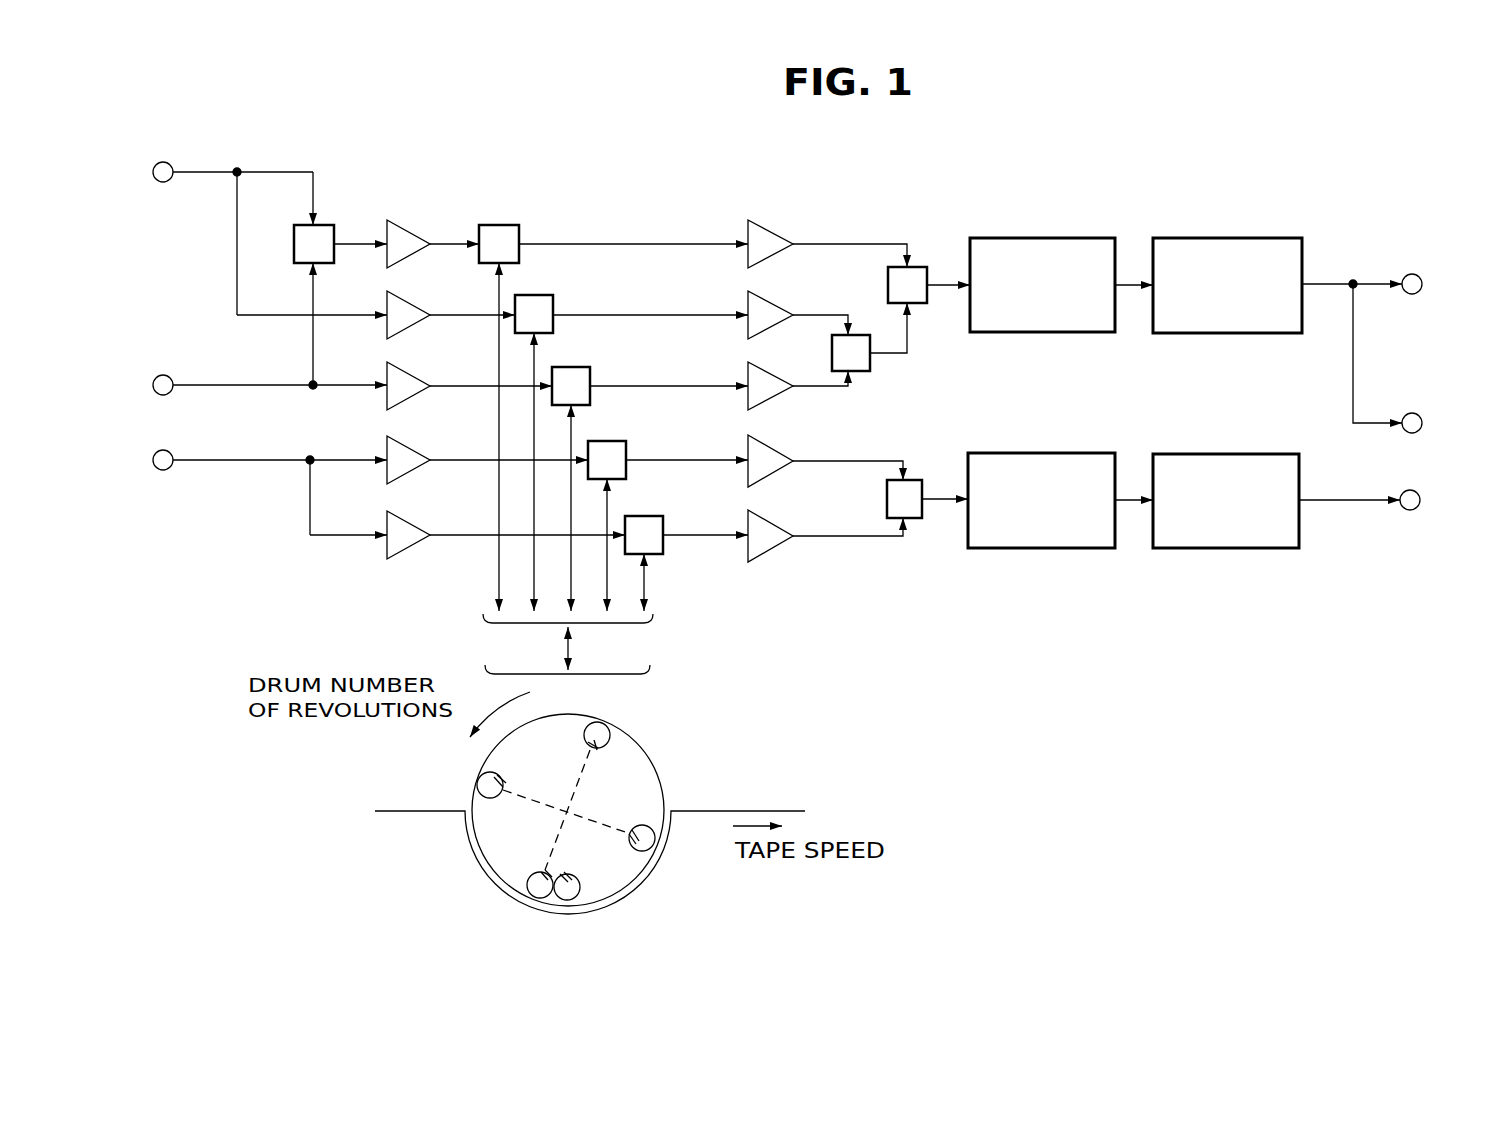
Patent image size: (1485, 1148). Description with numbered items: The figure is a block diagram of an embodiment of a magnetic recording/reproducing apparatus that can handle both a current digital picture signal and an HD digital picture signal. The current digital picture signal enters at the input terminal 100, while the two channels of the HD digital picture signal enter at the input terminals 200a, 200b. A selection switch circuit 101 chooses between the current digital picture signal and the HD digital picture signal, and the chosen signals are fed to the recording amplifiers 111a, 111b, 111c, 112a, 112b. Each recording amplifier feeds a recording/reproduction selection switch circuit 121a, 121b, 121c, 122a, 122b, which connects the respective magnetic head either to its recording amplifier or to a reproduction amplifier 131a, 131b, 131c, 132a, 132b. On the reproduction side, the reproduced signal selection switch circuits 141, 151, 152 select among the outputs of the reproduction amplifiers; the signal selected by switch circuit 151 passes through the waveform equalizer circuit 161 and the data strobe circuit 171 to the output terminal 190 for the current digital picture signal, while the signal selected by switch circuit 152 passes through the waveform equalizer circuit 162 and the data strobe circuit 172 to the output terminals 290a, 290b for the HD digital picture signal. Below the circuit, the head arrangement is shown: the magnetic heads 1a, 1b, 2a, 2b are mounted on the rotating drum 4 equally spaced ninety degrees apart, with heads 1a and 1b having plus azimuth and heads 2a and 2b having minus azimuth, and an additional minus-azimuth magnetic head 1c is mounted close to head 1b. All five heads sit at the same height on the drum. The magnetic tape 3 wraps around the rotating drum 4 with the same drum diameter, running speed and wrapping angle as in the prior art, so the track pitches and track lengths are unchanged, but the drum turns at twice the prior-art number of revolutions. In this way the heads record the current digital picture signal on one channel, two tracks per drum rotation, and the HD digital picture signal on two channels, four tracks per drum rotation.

The input terminal of the current digital picture signal 100 is at (165, 162).
The selection switch circuit 101 is at (335, 218).
The recording amplifier 111a is at (409, 228).
The recording amplifier 111b is at (403, 401).
The recording amplifier 111c is at (418, 323).
The recording amplifier 112a is at (413, 472).
The recording amplifier 112b is at (398, 553).
The recording/reproduction selection switch circuit 121a is at (500, 225).
The recording/reproduction selection switch circuit 121b is at (598, 352).
The recording/reproduction selection switch circuit 121c is at (553, 295).
The recording/reproduction selection switch circuit 122a is at (625, 442).
The recording/reproduction selection switch circuit 122b is at (663, 554).
The reproduction amplifier 131a is at (774, 231).
The reproduction amplifier 131b is at (750, 368).
The reproduction amplifier 131c is at (770, 300).
The reproduction amplifier 132a is at (778, 447).
The reproduction amplifier 132b is at (780, 552).
The reproduced signal selection switch circuit 141 is at (866, 372).
The reproduced signal selection switch circuit 151 is at (926, 262).
The reproduced signal selection switch circuit 152 is at (917, 520).
The waveform equalizer circuit 161 is at (1027, 237).
The waveform equalizer circuit 162 is at (1068, 549).
The data strobe circuit 171 is at (1180, 237).
The data strobe circuit 172 is at (1185, 549).
The output terminal of the current digital picture signal 190 is at (1412, 274).
The input terminal of the HD digital picture signal 200a is at (165, 375).
The input terminal of the HD digital picture signal 200b is at (164, 470).
The output terminal of the HD digital picture signal 290a is at (1412, 413).
The output terminal of the HD digital picture signal 290b is at (1410, 510).
The magnetic tape 3 is at (760, 800).
The rotating drum 4 is at (498, 838).
The magnetic head 1a is at (612, 734).
The magnetic head 1b is at (540, 880).
The magnetic head 1c is at (595, 896).
The magnetic head 2a is at (478, 791).
The magnetic head 2b is at (655, 853).